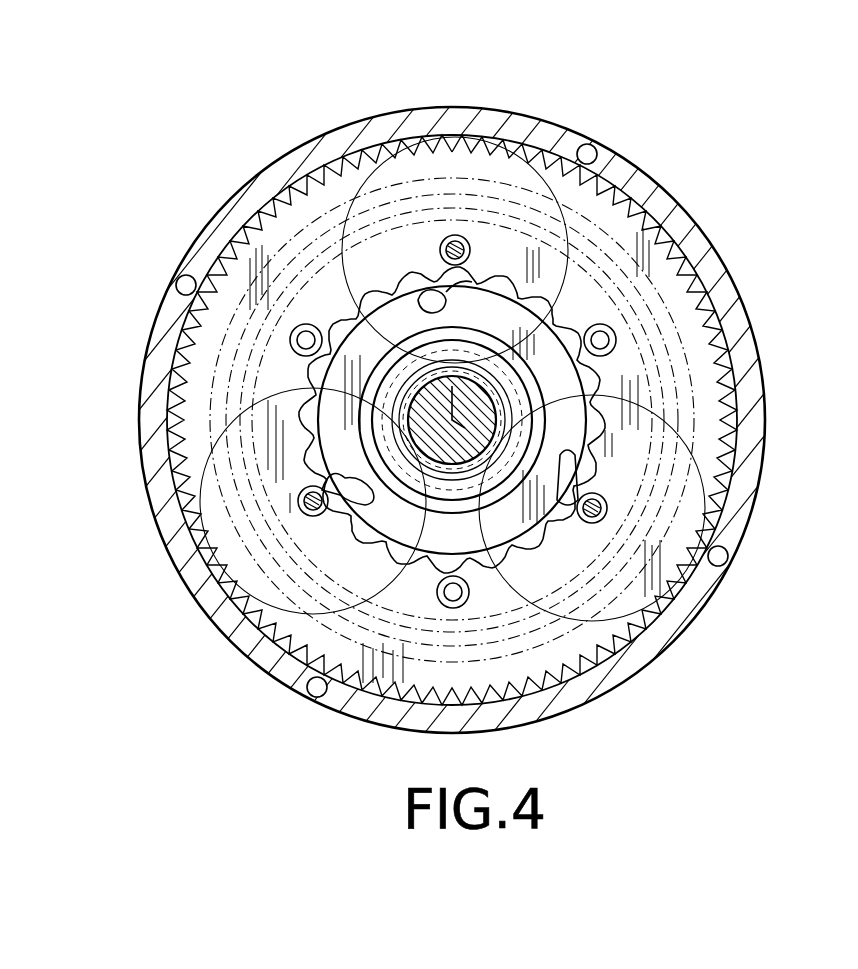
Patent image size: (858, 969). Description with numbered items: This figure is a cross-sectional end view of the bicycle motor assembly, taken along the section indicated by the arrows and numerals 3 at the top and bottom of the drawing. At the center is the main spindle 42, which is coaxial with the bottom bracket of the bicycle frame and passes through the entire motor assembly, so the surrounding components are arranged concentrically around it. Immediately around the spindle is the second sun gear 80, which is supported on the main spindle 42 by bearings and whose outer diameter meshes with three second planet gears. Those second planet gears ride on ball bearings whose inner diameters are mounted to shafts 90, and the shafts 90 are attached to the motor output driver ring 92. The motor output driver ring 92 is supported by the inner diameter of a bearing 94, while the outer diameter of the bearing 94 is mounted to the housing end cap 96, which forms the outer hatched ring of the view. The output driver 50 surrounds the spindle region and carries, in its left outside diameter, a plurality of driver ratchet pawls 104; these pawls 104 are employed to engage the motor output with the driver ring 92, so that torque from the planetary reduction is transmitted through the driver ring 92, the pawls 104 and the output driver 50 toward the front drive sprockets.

The section line 3- 3 is at (457, 95).
The main spindle 42 is at (427, 392).
The output driver 50 is at (400, 312).
The second sun gear 80 is at (403, 403).
The shaft 90 is at (463, 240).
The motor output driver ring 92 is at (580, 293).
The bearing 94 is at (647, 318).
The housing end cap 96 is at (753, 387).
The driver ratchet pawl 104 is at (440, 292).